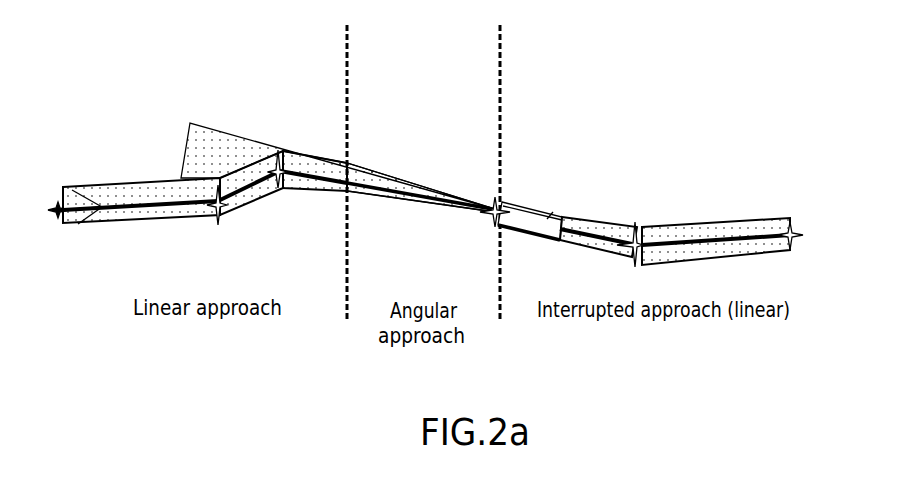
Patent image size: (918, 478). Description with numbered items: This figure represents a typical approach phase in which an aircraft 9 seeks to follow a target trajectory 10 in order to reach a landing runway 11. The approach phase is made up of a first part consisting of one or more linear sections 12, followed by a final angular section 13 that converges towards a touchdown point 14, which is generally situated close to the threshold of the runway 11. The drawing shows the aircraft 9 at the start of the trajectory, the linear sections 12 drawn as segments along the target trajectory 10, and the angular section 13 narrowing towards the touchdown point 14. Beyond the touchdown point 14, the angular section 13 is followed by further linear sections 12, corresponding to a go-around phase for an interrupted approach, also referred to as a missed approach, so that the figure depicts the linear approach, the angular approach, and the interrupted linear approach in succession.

The aircraft 9 is at (83, 188).
The target trajectory 10 is at (142, 198).
The landing runway 11 is at (562, 217).
The linear section 12 is at (165, 217).
The angular section 13 is at (390, 178).
The touchdown point 14 is at (496, 204).